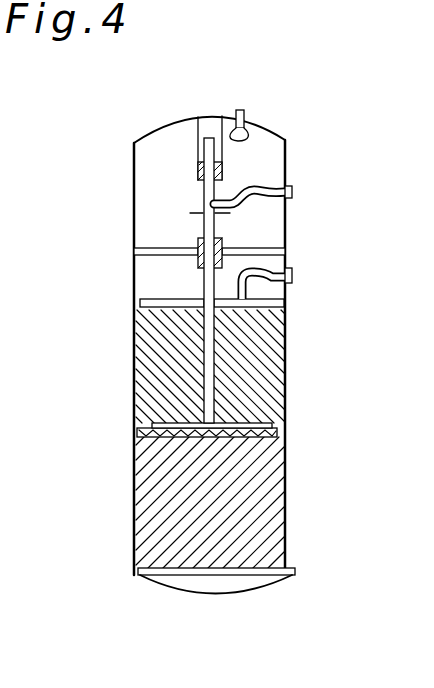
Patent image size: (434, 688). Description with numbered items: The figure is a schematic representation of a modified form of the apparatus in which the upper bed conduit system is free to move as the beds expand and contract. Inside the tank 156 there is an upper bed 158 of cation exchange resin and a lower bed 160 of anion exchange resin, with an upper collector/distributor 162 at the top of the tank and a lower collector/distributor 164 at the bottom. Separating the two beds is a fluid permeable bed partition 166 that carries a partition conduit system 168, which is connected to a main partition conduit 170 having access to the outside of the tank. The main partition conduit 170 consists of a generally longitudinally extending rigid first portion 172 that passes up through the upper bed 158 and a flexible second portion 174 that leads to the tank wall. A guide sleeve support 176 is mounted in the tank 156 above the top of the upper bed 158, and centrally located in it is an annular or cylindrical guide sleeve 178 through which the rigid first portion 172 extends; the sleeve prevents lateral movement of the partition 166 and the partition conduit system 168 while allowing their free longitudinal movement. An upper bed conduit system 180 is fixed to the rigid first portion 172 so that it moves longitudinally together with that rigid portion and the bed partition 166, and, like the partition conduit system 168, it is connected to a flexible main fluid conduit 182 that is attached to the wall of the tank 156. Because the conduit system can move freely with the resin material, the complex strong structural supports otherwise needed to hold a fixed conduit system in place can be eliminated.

The tank 156 is at (134, 360).
The upper bed 158 is at (192, 387).
The lower bed 160 is at (272, 513).
The upper collector/distributor 162 is at (244, 130).
The lower collector/distributor 164 is at (192, 574).
The fluid permeable bed partition 166 is at (155, 436).
The partition conduit system 168 is at (272, 425).
The main partition conduit 170 is at (214, 350).
The rigid first portion 172 is at (214, 400).
The flexible second portion 174 is at (268, 188).
The guide sleeve support 176 is at (270, 249).
The guide sleeve 178 is at (199, 241).
The upper bed conduit system 180 is at (156, 304).
The flexible main fluid conduit 182 is at (283, 274).